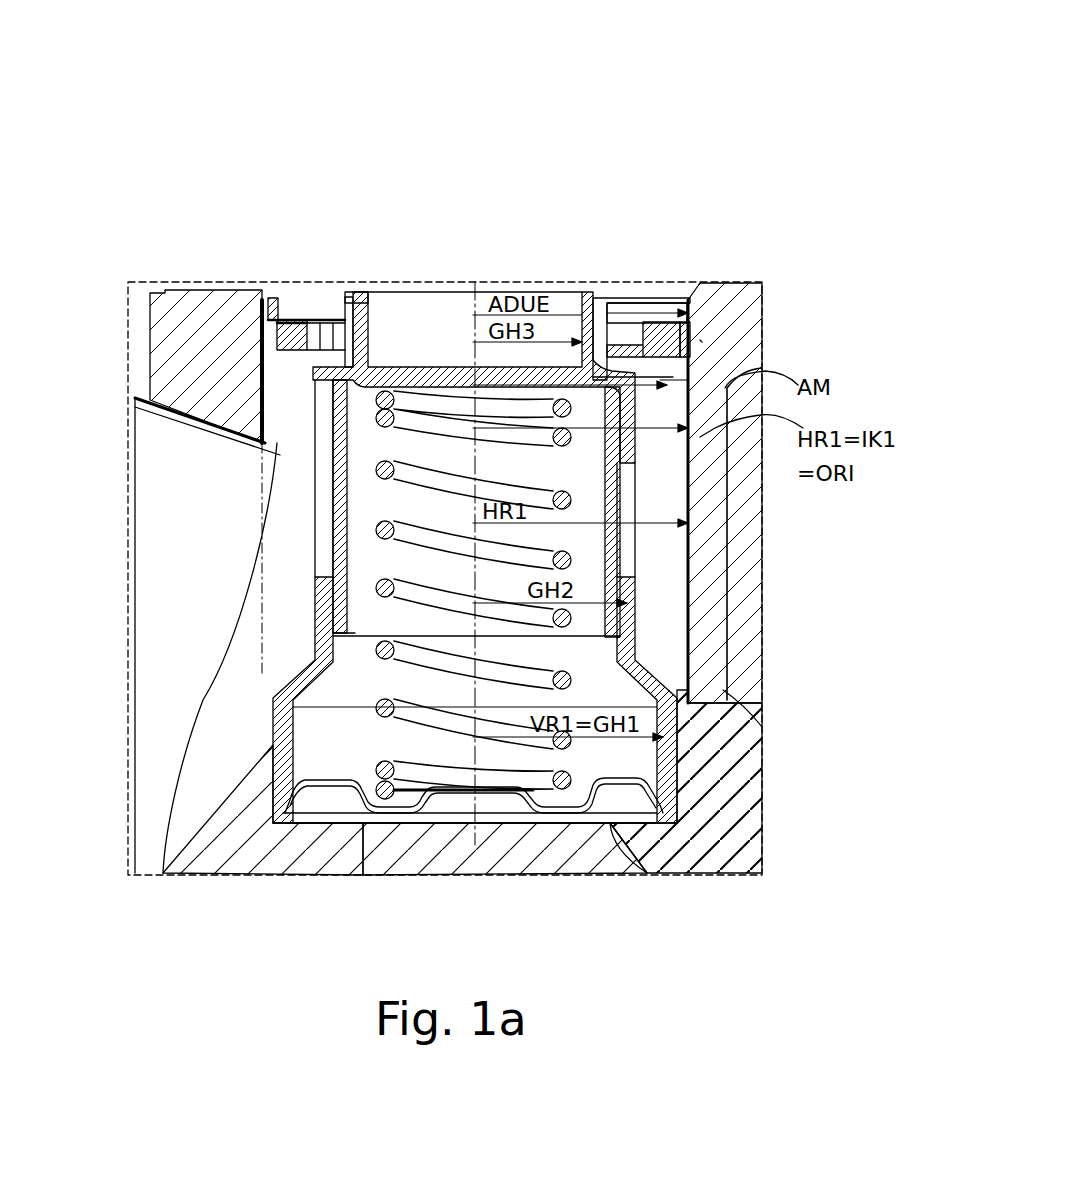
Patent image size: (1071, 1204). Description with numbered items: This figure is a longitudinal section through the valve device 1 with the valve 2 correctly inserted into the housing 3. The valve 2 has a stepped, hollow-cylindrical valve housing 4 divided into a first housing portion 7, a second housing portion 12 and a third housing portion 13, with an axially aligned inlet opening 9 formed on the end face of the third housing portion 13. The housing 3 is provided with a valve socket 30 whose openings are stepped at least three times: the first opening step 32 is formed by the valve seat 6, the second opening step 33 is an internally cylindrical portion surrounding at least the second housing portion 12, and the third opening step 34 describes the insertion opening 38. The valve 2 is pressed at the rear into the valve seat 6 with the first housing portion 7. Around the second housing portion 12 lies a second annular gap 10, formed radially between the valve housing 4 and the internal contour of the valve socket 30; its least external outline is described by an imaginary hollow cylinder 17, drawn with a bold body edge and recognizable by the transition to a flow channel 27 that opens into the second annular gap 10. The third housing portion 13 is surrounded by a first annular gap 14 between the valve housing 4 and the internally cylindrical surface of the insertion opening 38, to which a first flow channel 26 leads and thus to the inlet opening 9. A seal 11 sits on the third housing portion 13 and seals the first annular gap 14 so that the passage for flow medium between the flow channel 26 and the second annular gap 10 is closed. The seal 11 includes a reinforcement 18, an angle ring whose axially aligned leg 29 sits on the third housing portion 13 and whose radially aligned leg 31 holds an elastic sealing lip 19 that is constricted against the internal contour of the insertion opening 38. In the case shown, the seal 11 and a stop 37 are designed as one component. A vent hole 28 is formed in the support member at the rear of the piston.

The valve device 1 is at (722, 90).
The valve 2 is at (327, 733).
The housing 3 is at (735, 827).
The valve housing 4 is at (700, 660).
The valve seat 6 is at (630, 800).
The first housing portion 7 is at (700, 753).
The inlet opening 9 is at (432, 300).
The second annular gap 10 is at (700, 470).
The seal 11 is at (618, 330).
The second housing portion 12 is at (325, 612).
The third housing portion 13 is at (366, 300).
The first annular gap 14 is at (345, 312).
The imaginary hollow cylinder 17 is at (265, 455).
The reinforcement 18 is at (300, 310).
The sealing lip 19 is at (262, 305).
The flow channel 26 is at (688, 300).
The flow channel 27 is at (197, 590).
The vent hole 28 is at (412, 862).
The axially aligned leg 29 is at (357, 302).
The valve socket 30 is at (717, 580).
The radially aligned leg 31 is at (262, 300).
The first opening step 32 is at (628, 803).
The second opening step 33 is at (290, 523).
The third opening step 34 is at (668, 335).
The stop 37 is at (265, 347).
The insertion opening 38 is at (668, 340).